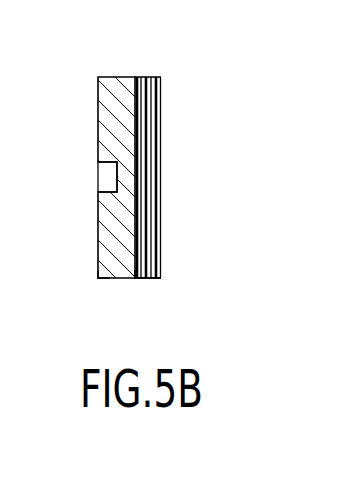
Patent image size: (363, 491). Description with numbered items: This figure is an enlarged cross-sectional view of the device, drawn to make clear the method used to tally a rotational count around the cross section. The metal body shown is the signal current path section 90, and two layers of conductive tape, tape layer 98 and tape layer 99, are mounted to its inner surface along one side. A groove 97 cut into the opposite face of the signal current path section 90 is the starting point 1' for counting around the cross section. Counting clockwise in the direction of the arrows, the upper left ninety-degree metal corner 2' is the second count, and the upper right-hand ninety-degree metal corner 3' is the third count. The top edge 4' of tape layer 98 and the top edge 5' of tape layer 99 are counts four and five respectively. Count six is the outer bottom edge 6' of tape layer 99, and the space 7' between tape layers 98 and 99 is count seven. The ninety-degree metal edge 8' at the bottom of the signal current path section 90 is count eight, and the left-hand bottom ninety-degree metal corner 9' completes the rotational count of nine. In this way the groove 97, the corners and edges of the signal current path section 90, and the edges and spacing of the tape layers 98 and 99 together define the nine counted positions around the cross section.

The starting point 1' is at (77, 161).
The upper left 90 degree metal corner 2' is at (90, 148).
The upper right hand 90 degree metal corner 3' is at (128, 142).
The top edge of tape layer 4' is at (160, 146).
The top edge of tape layer 5' is at (177, 169).
The outer bottom edge of tape layer 6' is at (185, 286).
The space between the tape layers 7' is at (160, 306).
The 90 degree metal edge 8' is at (128, 304).
The left hand bottom 90 degree metal corner 9' is at (76, 296).
The signal current path section 90 is at (129, 174).
The groove 97 is at (90, 182).
The tape layer 98 is at (191, 146).
The conductive tape layer 99 is at (194, 169).